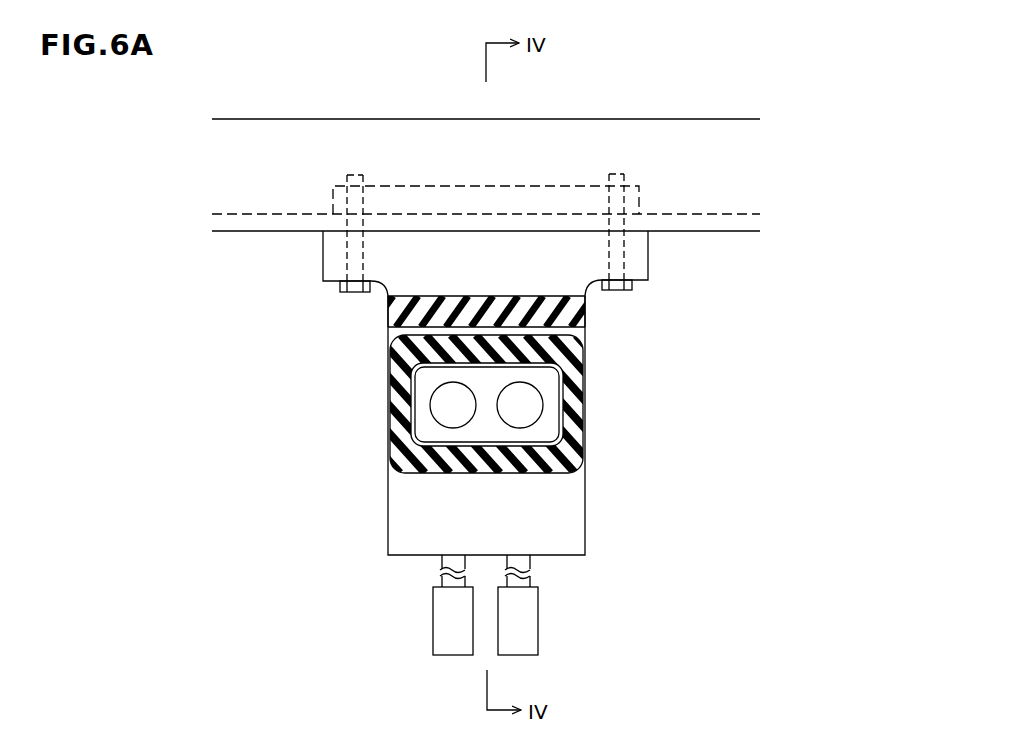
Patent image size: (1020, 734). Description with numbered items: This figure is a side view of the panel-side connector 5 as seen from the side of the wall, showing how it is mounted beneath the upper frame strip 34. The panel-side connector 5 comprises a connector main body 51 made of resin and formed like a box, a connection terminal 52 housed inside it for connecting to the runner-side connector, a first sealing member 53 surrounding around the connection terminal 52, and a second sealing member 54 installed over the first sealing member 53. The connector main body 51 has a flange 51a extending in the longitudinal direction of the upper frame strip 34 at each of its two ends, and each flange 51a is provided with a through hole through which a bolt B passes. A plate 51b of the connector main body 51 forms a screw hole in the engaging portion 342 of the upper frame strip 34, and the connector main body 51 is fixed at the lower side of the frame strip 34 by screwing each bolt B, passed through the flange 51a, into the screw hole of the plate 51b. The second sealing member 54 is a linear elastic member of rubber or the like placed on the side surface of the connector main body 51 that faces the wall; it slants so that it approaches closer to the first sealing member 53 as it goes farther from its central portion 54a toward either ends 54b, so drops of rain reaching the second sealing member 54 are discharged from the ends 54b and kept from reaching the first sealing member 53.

The frame strip 34 is at (668, 117).
The engaging portion 342 is at (716, 213).
The plate 51b is at (468, 185).
The flange 51a is at (641, 250).
The bolt B is at (340, 287).
The second sealing member 54 is at (388, 312).
The central portion 54a is at (478, 296).
The either ends 54b is at (400, 296).
The first sealing member 53 is at (396, 401).
The connection terminal 52 is at (527, 403).
The connector main body 51 is at (565, 490).
The panel-side connector 5 is at (587, 530).